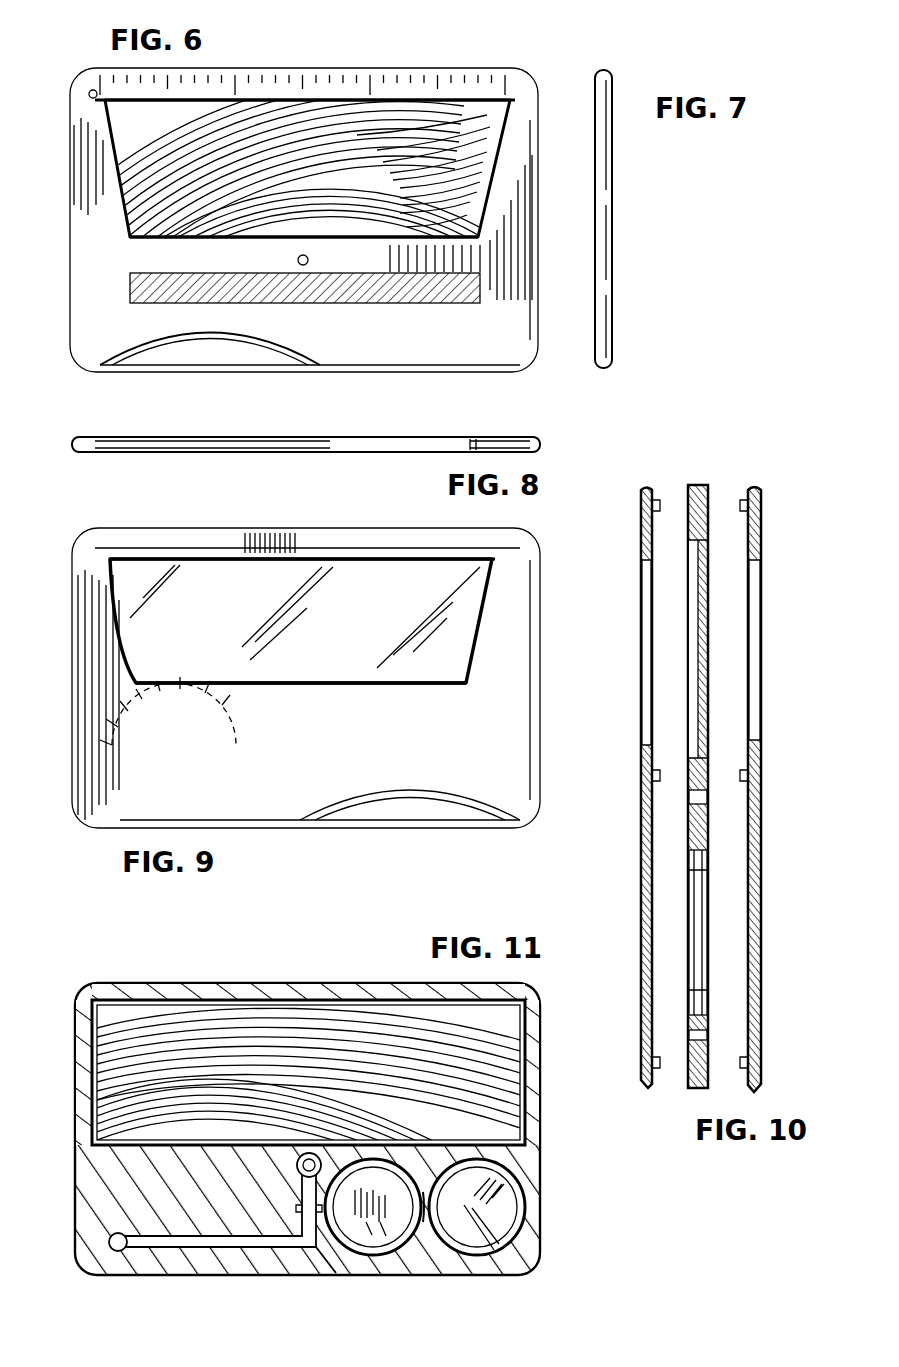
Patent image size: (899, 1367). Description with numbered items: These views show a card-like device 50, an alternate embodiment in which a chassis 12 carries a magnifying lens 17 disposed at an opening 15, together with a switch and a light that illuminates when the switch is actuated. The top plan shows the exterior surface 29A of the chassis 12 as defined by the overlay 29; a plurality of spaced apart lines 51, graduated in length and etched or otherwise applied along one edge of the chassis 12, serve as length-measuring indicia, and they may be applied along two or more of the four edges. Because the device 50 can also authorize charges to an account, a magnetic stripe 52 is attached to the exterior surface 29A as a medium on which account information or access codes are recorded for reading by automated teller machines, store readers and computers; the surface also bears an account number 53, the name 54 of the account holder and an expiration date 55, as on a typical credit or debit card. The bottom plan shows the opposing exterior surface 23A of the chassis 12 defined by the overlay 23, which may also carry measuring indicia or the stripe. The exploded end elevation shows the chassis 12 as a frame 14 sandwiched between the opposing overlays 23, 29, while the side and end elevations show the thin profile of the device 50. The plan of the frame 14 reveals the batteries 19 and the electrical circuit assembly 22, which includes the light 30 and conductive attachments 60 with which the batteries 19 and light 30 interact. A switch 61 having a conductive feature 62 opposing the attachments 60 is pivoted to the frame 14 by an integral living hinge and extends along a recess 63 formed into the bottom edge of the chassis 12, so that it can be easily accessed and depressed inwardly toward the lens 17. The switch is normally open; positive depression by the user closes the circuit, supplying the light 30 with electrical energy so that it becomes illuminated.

In FIG. 6, the chassis 12 is at (68, 240).
In FIG. 7, the chassis 12 is at (620, 325).
In FIG. 8, the chassis 12 is at (522, 438).
In FIG. 9, the chassis 12 is at (542, 736).
In FIG. 10, the chassis 12 is at (698, 486).
In FIG. 10, the frame 14 is at (709, 526).
In FIG. 11, the frame 14 is at (536, 1124).
In FIG. 6, the opening 15 is at (258, 136).
In FIG. 9, the opening 15 is at (166, 630).
In FIG. 11, the opening 15 is at (372, 1052).
In FIG. 6, the lens 17 is at (480, 110).
In FIG. 9, the lens 17 is at (275, 582).
In FIG. 11, the lens 17 is at (322, 1012).
In FIG. 11, the batteries 19 is at (510, 1216).
In FIG. 11, the electrical circuit assembly 22 is at (374, 1254).
In FIG. 9, the overlay 23 is at (514, 592).
In FIG. 10, the overlay 23 is at (762, 832).
In FIG. 9, the exterior surface 23A is at (305, 690).
In FIG. 6, the overlay 29 is at (520, 100).
In FIG. 10, the overlay 29 is at (640, 876).
In FIG. 6, the exterior surface 29A is at (160, 250).
In FIG. 6, the light 30 is at (302, 254).
In FIG. 11, the light 30 is at (300, 1153).
In FIG. 6, the device 50 is at (352, 44).
In FIG. 7, the device 50 is at (645, 226).
In FIG. 8, the device 50 is at (120, 460).
In FIG. 9, the device 50 is at (70, 776).
In FIG. 10, the device 50 is at (740, 476).
In FIG. 11, the device 50 is at (306, 952).
In FIG. 6, the lines 51 is at (372, 96).
In FIG. 6, the magnetic stripe 52 is at (345, 285).
In FIG. 6, the account number 53 is at (485, 280).
In FIG. 6, the name 54 is at (348, 356).
In FIG. 6, the expiration date 55 is at (455, 350).
In FIG. 11, the conductive attachments 60 is at (296, 1210).
In FIG. 6, the switch 61 is at (155, 356).
In FIG. 11, the switch 61 is at (178, 1264).
In FIG. 11, the conductive feature 62 is at (185, 1240).
In FIG. 6, the recess 63 is at (226, 346).